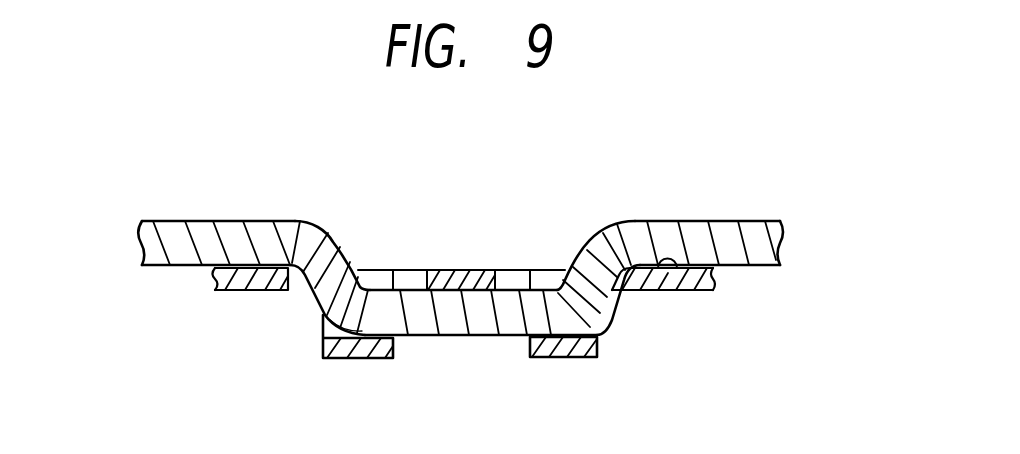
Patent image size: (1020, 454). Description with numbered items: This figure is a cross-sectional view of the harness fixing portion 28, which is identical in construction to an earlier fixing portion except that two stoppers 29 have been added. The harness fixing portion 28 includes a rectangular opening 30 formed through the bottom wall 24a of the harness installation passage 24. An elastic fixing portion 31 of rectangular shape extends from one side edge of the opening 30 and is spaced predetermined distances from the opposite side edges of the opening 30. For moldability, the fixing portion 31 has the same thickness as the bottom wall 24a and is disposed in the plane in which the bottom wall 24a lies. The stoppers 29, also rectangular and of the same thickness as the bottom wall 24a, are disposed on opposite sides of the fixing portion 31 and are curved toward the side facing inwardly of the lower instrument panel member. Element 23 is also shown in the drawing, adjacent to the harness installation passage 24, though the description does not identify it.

The right plate portion 23 is at (670, 229).
The harness installation passage 24 is at (305, 175).
The bottom wall 24a is at (683, 292).
The harness fixing portion 28 is at (487, 254).
The stopper 29 is at (368, 350).
The opening 30 is at (398, 282).
The elastic fixing portion 31 is at (463, 268).